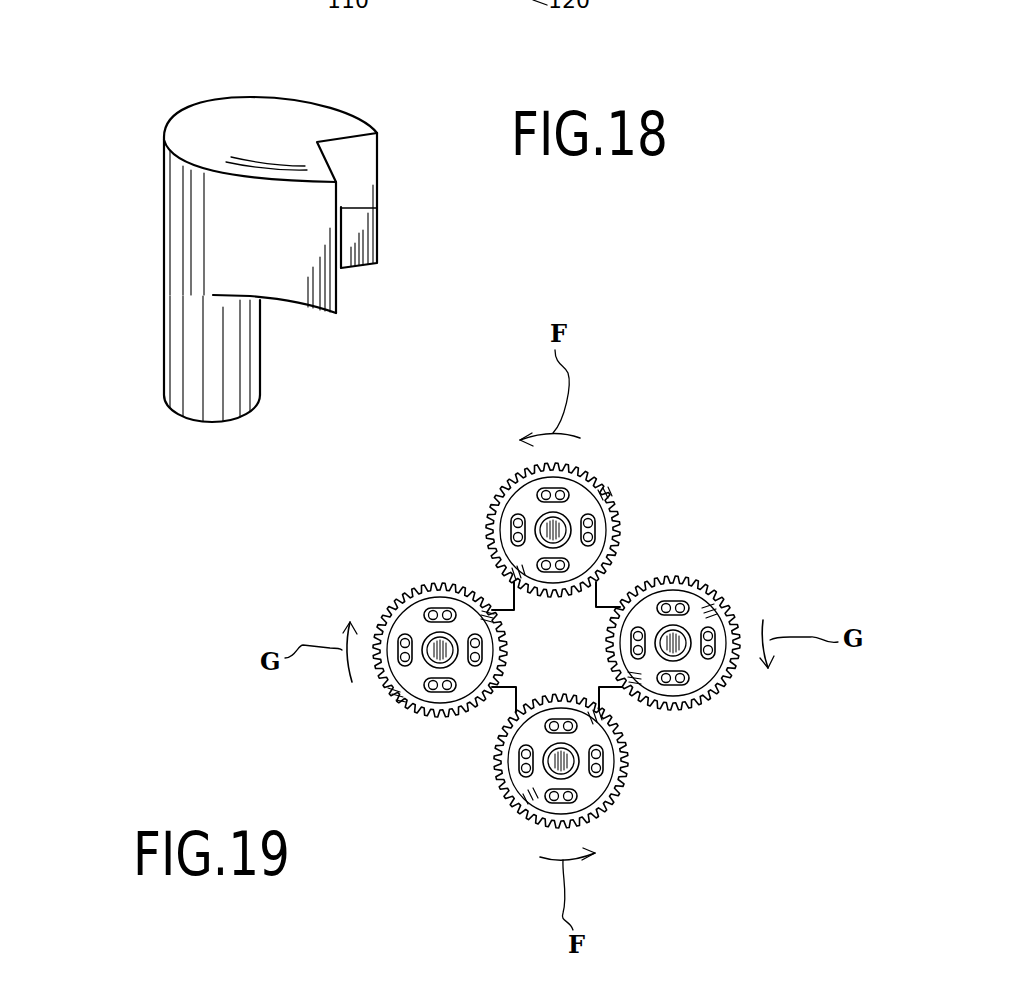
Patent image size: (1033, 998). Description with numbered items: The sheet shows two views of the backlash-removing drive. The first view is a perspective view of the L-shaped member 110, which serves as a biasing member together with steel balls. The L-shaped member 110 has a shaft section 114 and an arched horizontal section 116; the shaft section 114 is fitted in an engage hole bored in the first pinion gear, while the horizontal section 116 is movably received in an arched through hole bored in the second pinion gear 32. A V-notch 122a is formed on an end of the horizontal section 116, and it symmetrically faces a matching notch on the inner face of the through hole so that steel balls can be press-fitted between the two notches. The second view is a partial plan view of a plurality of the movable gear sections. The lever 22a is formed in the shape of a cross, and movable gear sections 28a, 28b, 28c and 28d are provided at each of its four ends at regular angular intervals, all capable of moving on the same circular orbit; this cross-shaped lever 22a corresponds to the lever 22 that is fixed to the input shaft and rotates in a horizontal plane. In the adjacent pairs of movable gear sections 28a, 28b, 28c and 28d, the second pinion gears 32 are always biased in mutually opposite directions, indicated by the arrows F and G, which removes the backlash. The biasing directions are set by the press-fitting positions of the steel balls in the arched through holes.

In FIG. 18, the L-shaped member 110 is at (269, 256).
In FIG. 18, the shaft section 114 is at (228, 423).
In FIG. 18, the arched horizontal section 116 is at (278, 128).
In FIG. 18, the V-notch 122a is at (377, 208).
In FIG. 19, the lever 22 is at (577, 645).
In FIG. 19, the lever 22a is at (515, 688).
In FIG. 19, the movable gear section 28a is at (605, 492).
In FIG. 19, the movable gear section 28b is at (718, 698).
In FIG. 19, the movable gear section 28c is at (525, 817).
In FIG. 19, the movable gear section 28d is at (403, 592).
In FIG. 19, the second pinion gear 32 is at (528, 503).